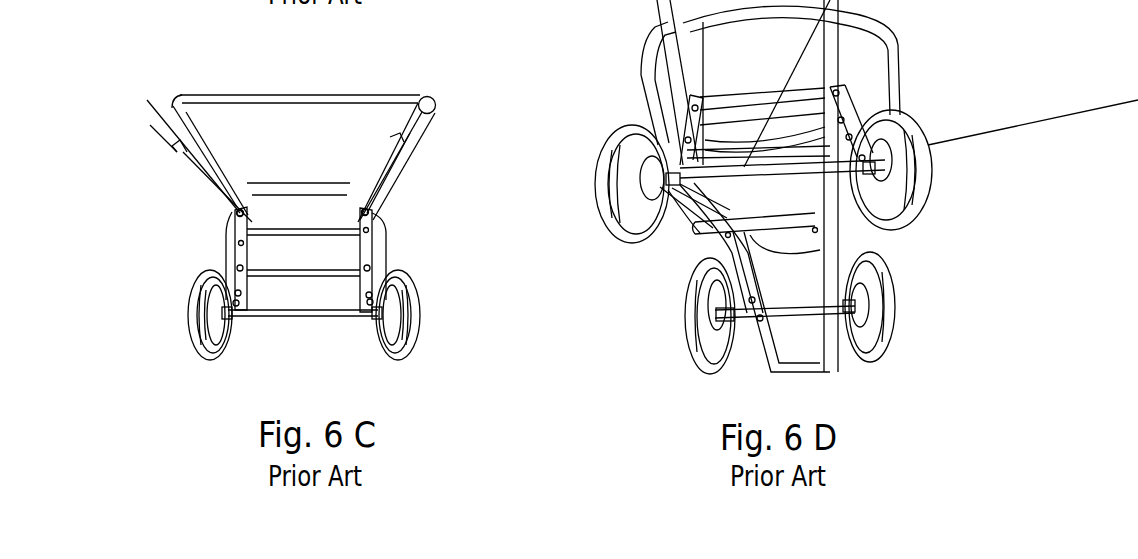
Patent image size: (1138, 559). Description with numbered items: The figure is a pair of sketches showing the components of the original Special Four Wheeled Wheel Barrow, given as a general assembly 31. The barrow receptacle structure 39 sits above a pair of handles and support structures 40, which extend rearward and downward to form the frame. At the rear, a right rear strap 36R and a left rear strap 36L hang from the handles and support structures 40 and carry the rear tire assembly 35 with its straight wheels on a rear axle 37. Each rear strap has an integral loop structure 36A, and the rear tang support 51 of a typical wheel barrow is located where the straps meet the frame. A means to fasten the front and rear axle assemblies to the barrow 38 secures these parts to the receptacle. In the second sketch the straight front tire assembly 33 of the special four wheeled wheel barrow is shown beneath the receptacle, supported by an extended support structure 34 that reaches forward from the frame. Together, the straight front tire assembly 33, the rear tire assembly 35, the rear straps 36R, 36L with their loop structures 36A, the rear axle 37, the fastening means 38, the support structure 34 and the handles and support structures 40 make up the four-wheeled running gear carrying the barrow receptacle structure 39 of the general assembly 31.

In FIG. 6C, the general assembly of the Special Big Four Wheeler Swivel Wheeled Wheel Barrow 31 is at (128, 322).
In FIG. 6D, the general assembly of the Special Big Four Wheeler Swivel Wheeled Wheel Barrow 31 is at (652, 332).
In FIG. 6D, the straight front tire assembly 33 is at (895, 316).
In FIG. 6D, the support structure (extended) 34 is at (830, 365).
In FIG. 6C, the rear tire assembly 35 is at (203, 356).
In FIG. 6C, the integral loop structure 36A is at (377, 315).
In FIG. 6D, the integral loop structure 36A is at (672, 180).
In FIG. 6C, the left rear strap 36L is at (240, 255).
In FIG. 6C, the right rear strap 36R is at (373, 222).
In FIG. 6D, the right rear strap 36R is at (845, 120).
In FIG. 6C, the rear axle 37 is at (278, 316).
In FIG. 6C, the means to fasten front and rear axle assemblies to barrow 38 is at (372, 268).
In FIG. 6D, the means to fasten front and rear axle assemblies to barrow 38 is at (855, 132).
In FIG. 6C, the barrow receptacle structure 39 is at (277, 134).
In FIG. 6D, the barrow receptacle structure 39 is at (668, 85).
In FIG. 6C, the handles and support structure 40 is at (203, 170).
In FIG. 6D, the handles and support structure 40 is at (668, 10).
In FIG. 6C, the rear tang support 51 is at (238, 218).
In FIG. 6D, the rear tang support 51 is at (691, 130).